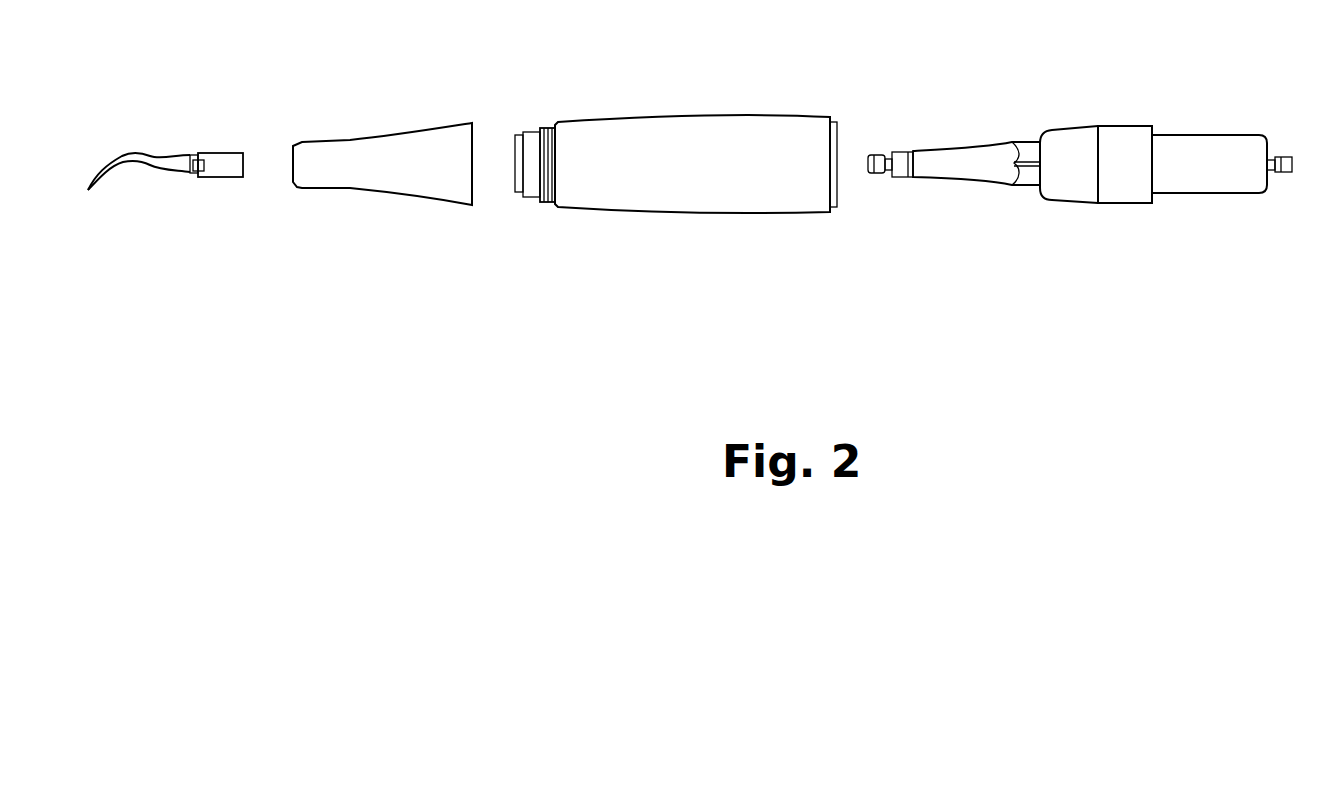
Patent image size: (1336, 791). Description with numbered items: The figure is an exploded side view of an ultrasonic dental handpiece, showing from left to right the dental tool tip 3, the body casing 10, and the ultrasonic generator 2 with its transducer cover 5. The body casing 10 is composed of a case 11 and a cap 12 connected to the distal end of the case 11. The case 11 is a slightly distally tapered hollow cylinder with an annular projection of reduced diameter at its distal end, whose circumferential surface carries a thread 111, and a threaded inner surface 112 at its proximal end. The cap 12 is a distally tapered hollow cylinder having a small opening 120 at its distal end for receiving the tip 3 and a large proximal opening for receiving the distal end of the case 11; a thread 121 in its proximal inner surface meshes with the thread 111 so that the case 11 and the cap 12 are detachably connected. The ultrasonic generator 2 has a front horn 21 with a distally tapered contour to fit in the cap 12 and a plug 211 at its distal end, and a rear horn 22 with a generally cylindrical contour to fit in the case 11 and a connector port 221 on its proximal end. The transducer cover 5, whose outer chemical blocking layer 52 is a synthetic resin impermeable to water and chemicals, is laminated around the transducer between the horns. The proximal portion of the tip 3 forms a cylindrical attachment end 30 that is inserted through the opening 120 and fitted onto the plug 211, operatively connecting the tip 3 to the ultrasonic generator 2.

The ultrasonic generator 2 is at (1070, 118).
The dental tool tip 3 is at (168, 158).
The transducer cover 5 is at (1110, 140).
The body casing 10 is at (587, 42).
The case 11 is at (575, 142).
The cap 12 is at (442, 143).
The front horn 21 is at (975, 158).
The rear horn 22 is at (1180, 153).
The attachment end 30 is at (222, 160).
The chemical blocking layer 52 is at (1108, 203).
The thread 111 is at (533, 182).
The threaded inner surface 112 is at (840, 190).
The small opening 120 is at (293, 168).
The thread 121 is at (473, 182).
The plug 211 is at (877, 153).
The connector port 221 is at (1285, 155).